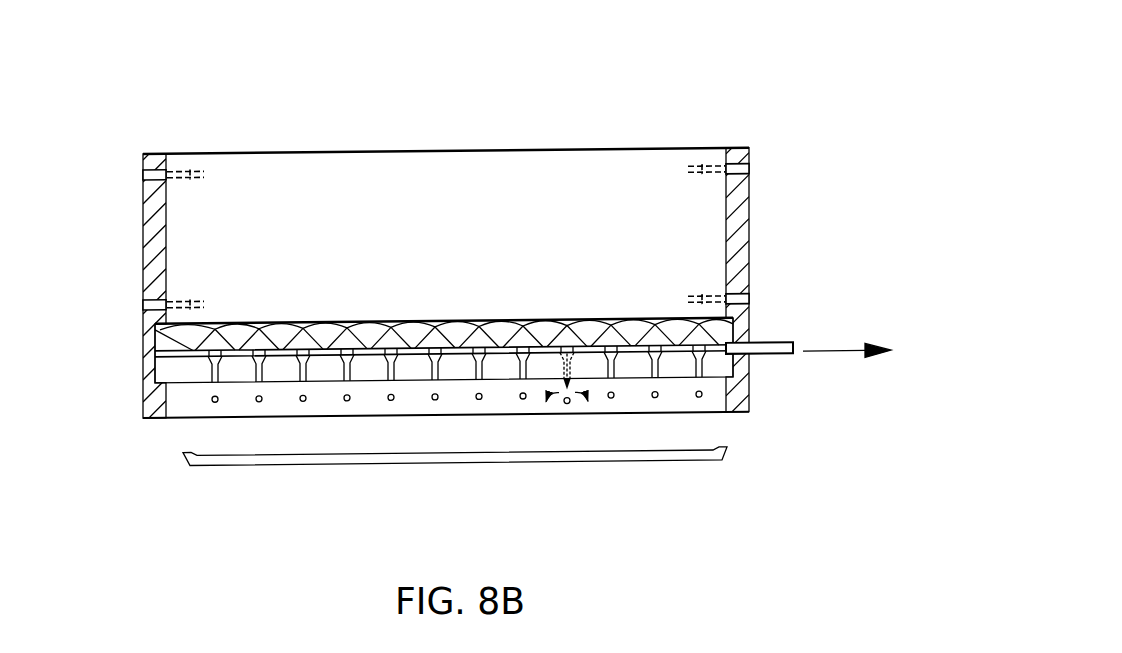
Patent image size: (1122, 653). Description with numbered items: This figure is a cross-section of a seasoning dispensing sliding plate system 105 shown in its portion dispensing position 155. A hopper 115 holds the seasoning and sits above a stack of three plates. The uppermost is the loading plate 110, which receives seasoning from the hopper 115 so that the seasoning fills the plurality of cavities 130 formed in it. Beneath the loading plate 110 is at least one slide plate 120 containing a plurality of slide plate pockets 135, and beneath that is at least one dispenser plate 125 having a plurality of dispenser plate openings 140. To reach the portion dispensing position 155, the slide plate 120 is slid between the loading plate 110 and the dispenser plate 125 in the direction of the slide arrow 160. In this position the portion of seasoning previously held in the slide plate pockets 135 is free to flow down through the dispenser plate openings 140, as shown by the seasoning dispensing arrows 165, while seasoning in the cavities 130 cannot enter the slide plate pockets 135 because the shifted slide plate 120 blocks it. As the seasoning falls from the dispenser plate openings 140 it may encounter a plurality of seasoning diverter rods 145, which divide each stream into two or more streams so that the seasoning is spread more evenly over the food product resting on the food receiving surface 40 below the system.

The food receiving surface 40 is at (372, 490).
The seasoning dispensing sliding plate system 105 is at (116, 352).
The loading plate 110 is at (720, 341).
The hopper 115 is at (202, 258).
The slide plate 120 is at (775, 355).
The dispenser plate 125 is at (722, 374).
The plurality of cavities 130 is at (240, 329).
The plurality of slide plate pockets 135 is at (483, 329).
The plurality of dispenser plate openings 140 is at (331, 387).
The plurality of seasoning diverter rods 145 is at (691, 400).
The portion dispensing position 155 is at (699, 83).
The slide arrow 160 is at (837, 360).
The seasoning dispensing arrows 165 is at (552, 431).